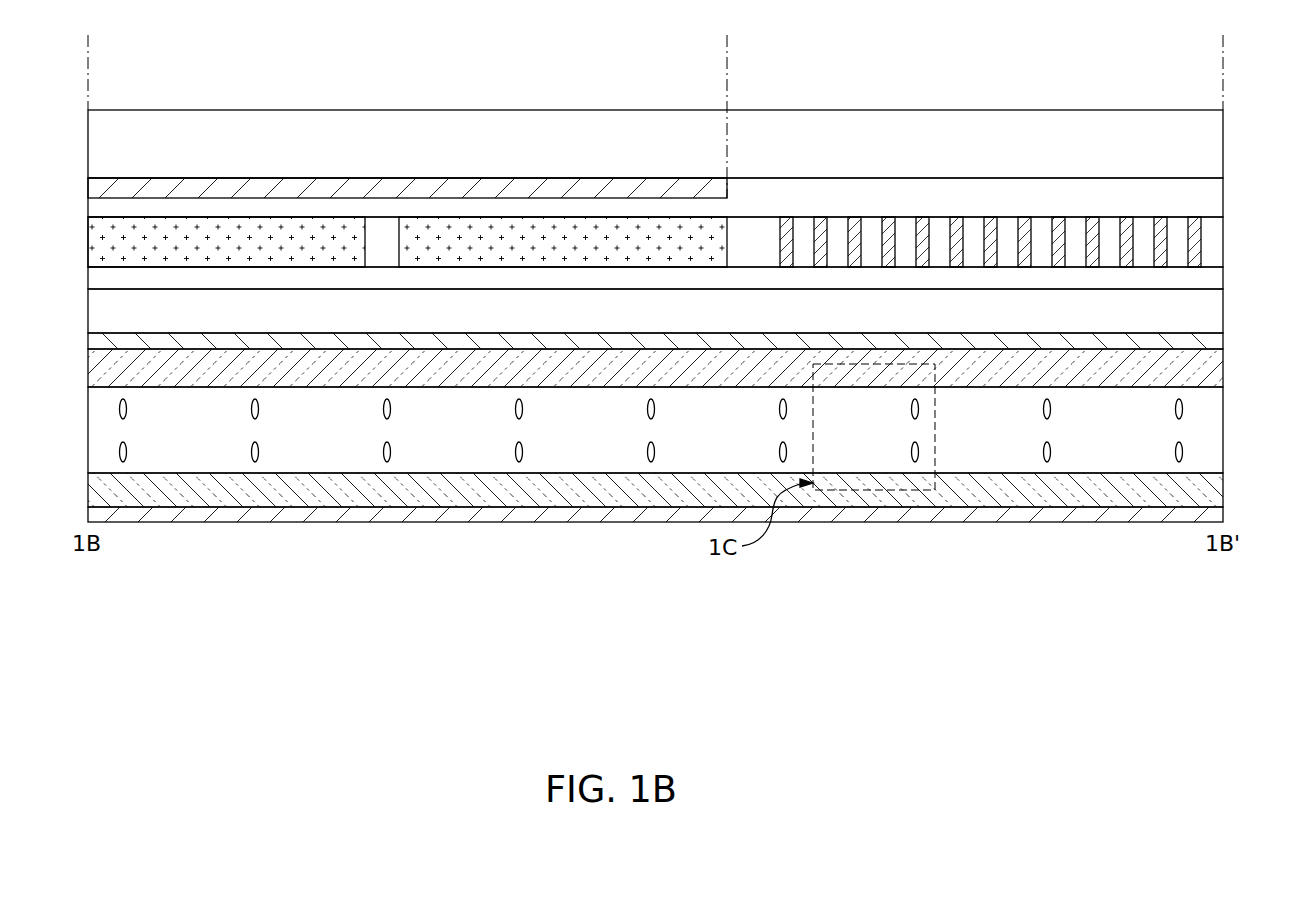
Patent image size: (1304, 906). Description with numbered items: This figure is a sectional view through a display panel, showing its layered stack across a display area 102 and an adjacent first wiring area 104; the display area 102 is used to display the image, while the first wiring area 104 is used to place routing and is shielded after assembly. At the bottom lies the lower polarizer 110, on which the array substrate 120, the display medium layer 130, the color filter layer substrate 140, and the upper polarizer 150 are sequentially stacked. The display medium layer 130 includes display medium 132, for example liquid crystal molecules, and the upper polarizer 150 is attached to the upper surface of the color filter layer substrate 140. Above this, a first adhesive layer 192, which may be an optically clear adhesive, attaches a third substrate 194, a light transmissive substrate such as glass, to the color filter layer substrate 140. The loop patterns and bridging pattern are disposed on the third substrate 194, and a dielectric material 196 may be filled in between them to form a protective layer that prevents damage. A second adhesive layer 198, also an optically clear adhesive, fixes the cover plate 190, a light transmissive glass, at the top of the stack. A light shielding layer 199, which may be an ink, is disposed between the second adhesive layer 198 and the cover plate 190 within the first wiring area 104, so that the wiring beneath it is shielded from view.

The display area 102 is at (1223, 42).
The first wiring area 104 is at (727, 42).
The lower polarizer 110 is at (1205, 517).
The array substrate 120 is at (1205, 492).
The display medium layer 130 is at (1205, 429).
The display medium 132 is at (1050, 452).
The color filter layer substrate 140 is at (1205, 372).
The upper polarizer 150 is at (1205, 346).
The cover plate 190 is at (1205, 142).
The first adhesive layer 192 is at (1205, 316).
The third substrate 194 is at (1205, 279).
The dielectric material 196 is at (1205, 244).
The second adhesive layer 198 is at (1205, 196).
The light shielding layer 199 is at (97, 184).